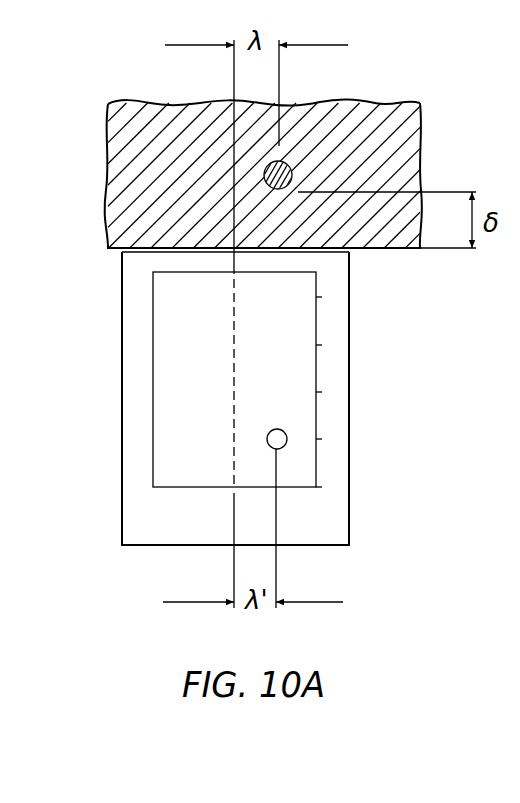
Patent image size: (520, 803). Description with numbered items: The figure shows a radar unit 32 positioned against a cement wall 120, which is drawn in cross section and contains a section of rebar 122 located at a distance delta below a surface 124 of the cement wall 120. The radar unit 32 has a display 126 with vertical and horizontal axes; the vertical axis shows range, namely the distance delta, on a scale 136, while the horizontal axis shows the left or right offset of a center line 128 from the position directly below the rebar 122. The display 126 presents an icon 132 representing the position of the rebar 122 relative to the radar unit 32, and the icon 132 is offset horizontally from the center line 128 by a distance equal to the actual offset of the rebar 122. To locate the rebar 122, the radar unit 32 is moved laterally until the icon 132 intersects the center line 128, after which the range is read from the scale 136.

The radar unit 32 is at (349, 518).
The cement wall 120 is at (420, 144).
The rebar 122 is at (288, 163).
The surface of cement wall 124 is at (375, 255).
The display 126 is at (166, 337).
The center line 128 is at (233, 390).
The icon 132 is at (277, 429).
The scale 136 is at (316, 371).